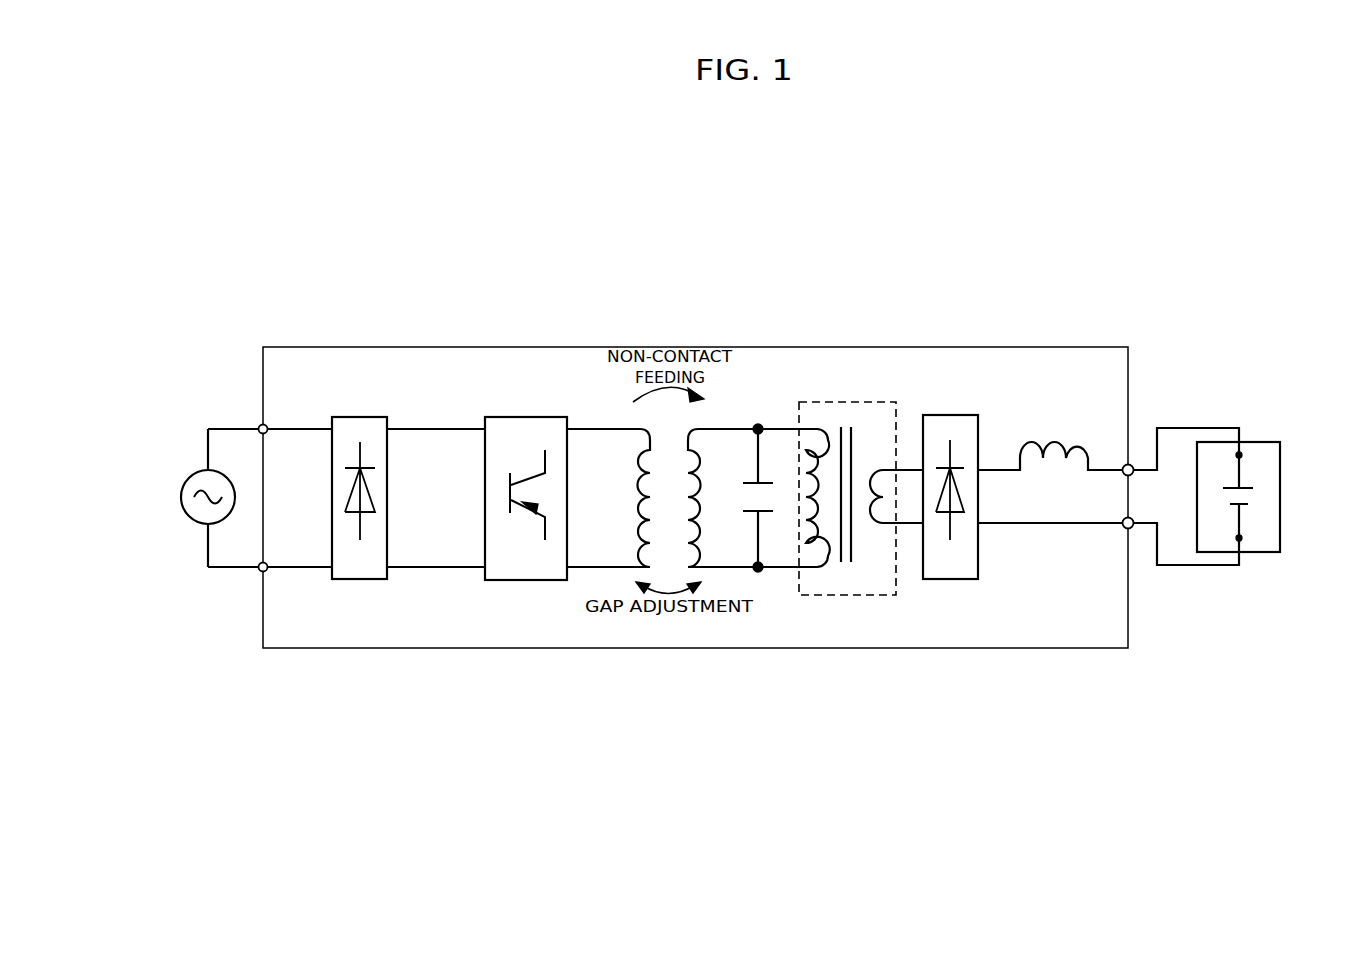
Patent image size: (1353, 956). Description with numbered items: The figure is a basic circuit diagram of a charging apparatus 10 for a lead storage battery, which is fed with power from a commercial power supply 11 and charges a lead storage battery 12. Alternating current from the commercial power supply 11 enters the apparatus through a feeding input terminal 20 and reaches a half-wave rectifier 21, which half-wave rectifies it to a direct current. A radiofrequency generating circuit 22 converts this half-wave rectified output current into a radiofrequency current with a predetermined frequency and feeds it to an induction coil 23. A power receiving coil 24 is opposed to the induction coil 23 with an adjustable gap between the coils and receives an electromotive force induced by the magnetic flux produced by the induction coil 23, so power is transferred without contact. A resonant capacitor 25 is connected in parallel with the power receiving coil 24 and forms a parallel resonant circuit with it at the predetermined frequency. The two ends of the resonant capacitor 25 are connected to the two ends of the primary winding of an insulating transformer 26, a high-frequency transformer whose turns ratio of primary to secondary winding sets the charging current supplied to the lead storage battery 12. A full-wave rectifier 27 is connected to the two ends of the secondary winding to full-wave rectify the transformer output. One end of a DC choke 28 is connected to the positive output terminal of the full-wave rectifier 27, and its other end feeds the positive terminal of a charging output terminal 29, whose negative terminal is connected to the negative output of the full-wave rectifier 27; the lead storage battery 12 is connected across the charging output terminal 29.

The charging apparatus 10 is at (776, 345).
The commercial power supply 11 is at (182, 517).
The lead storage battery 12 is at (1268, 442).
The feeding input terminal 20 is at (261, 426).
The half-wave rectifier 21 is at (366, 580).
The radiofrequency generating circuit 22 is at (495, 582).
The induction coil 23 is at (651, 525).
The power receiving coil 24 is at (689, 460).
The resonant capacitor 25 is at (755, 482).
The insulating transformer 26 is at (898, 420).
The full-wave rectifier 27 is at (966, 415).
The DC choke 28 is at (1073, 440).
The charging output terminal 29 is at (1133, 464).